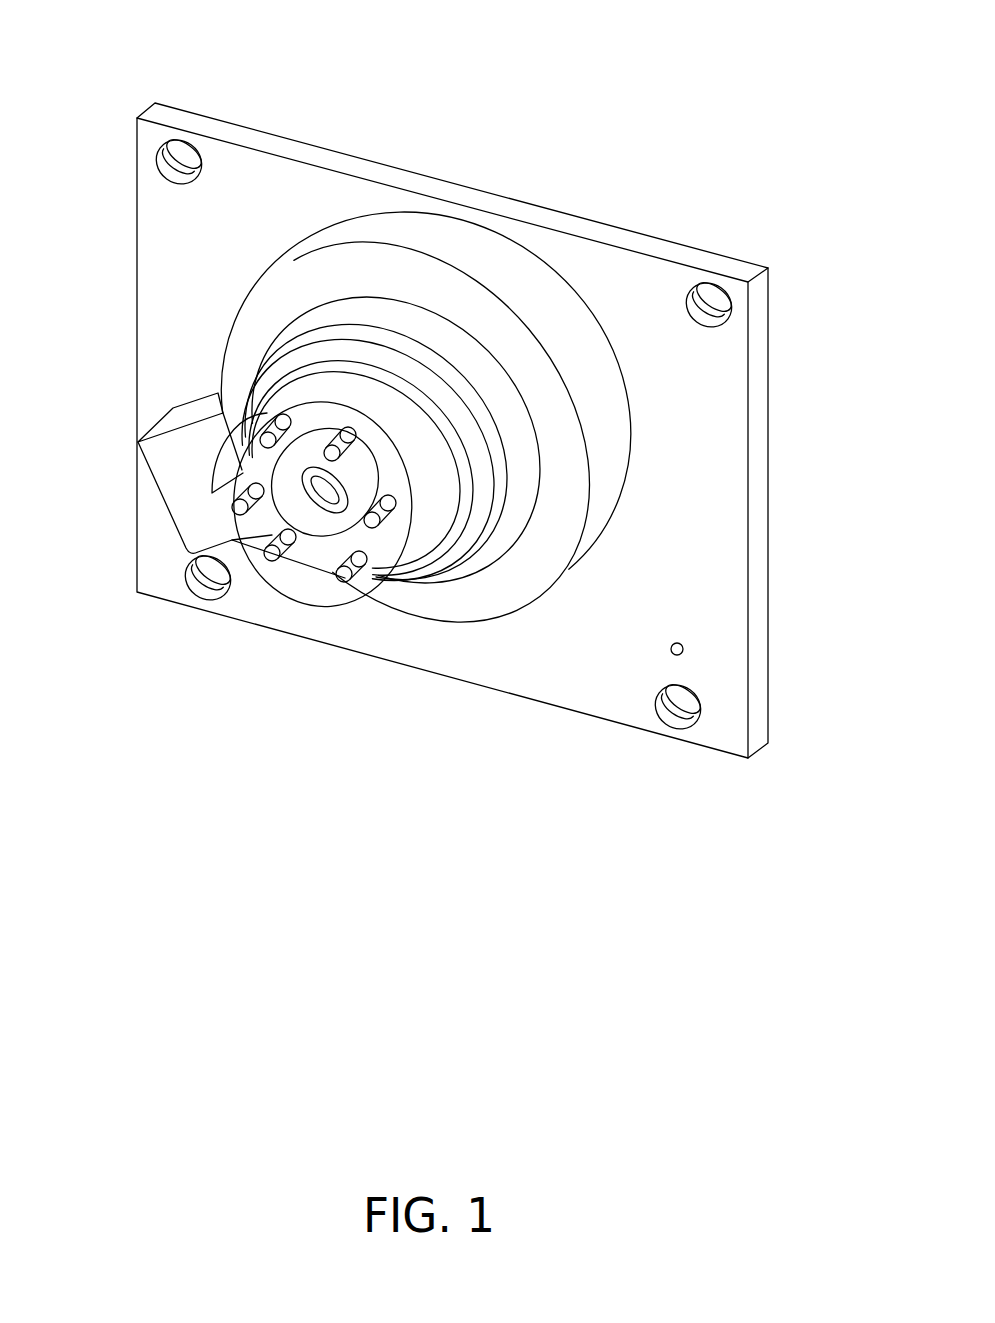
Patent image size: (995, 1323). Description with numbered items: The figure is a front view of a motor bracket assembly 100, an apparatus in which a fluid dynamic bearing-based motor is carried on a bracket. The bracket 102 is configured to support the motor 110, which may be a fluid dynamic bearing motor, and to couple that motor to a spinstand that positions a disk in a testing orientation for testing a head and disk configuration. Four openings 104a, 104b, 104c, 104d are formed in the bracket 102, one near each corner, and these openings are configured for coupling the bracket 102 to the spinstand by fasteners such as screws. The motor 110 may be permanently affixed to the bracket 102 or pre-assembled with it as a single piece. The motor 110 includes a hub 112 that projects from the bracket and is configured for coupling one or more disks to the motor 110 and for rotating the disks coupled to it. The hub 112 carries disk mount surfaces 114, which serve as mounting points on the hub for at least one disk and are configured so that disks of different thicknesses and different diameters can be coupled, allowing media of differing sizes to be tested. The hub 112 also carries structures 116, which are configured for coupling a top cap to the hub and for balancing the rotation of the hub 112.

The motor bracket assembly 100 is at (62, 30).
The bracket 102 is at (283, 173).
The opening 104a is at (186, 147).
The opening 104b is at (713, 289).
The opening 104c is at (203, 588).
The opening 104d is at (673, 715).
The motor 110 is at (352, 270).
The hub 112 is at (422, 320).
The disk mount surfaces 114 is at (460, 452).
The structures 116 is at (373, 524).